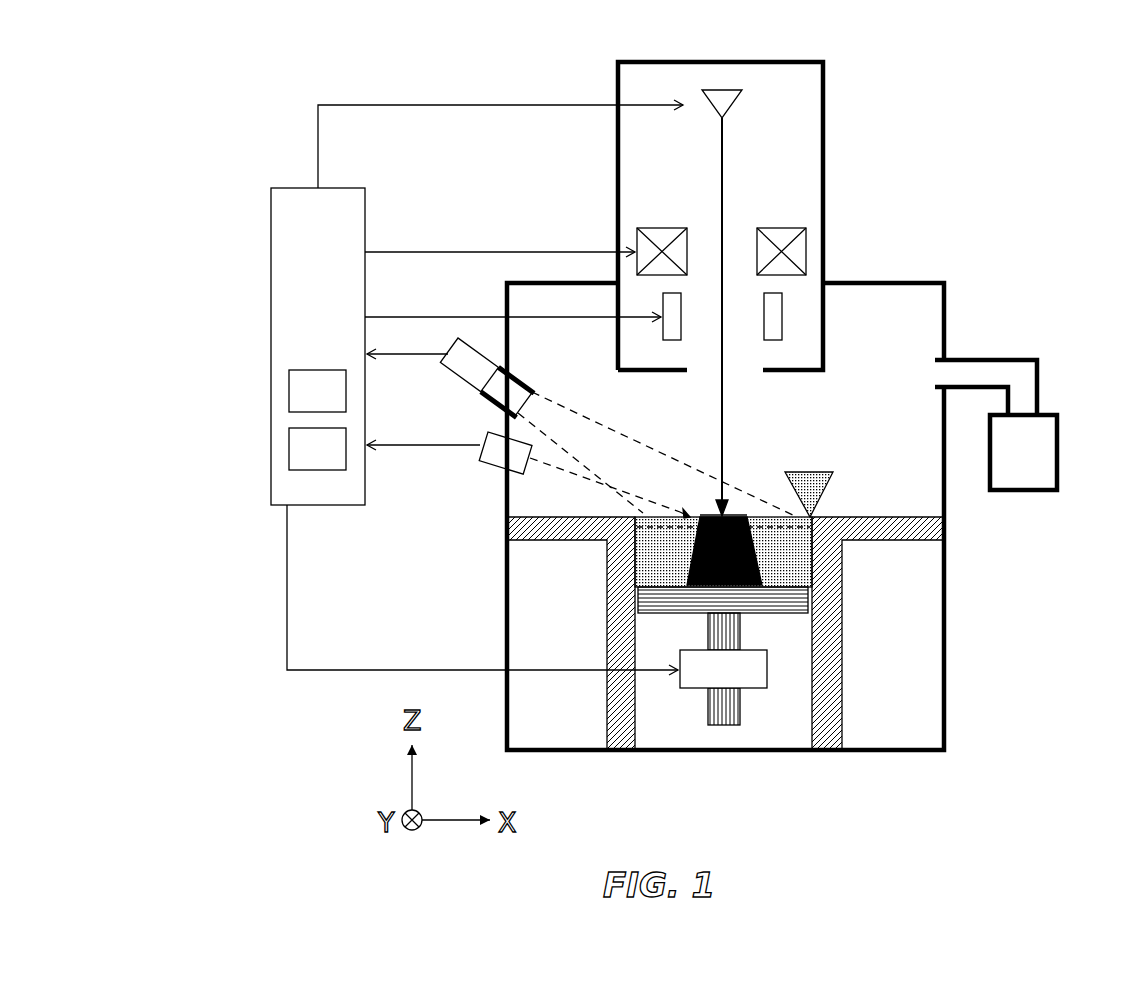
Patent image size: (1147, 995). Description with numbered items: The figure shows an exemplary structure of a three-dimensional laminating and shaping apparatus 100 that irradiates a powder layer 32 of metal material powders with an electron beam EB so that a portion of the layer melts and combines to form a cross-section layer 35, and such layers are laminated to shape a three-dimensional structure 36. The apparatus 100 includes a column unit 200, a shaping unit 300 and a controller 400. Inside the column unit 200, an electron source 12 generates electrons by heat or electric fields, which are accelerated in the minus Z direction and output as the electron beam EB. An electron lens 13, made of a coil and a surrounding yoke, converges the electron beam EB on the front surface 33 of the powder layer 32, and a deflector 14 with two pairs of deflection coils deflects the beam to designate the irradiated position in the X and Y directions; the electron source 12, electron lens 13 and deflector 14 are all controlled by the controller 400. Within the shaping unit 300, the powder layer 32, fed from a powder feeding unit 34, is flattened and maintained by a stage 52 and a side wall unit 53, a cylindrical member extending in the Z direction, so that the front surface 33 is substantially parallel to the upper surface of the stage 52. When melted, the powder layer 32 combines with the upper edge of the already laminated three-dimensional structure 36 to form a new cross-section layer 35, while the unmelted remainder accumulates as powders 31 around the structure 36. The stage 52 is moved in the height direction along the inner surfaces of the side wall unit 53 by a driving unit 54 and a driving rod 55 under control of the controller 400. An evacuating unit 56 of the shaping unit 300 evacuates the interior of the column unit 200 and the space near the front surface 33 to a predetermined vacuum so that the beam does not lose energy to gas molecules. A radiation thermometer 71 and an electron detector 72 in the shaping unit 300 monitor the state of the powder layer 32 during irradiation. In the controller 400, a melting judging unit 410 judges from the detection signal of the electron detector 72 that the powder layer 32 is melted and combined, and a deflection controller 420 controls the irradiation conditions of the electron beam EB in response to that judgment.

The three-dimensional laminating and shaping apparatus 100 is at (642, 839).
The column unit 200 is at (846, 32).
The shaping unit 300 is at (1051, 294).
The controller 400 is at (268, 290).
The melting judging unit 410 is at (289, 392).
The deflection controller 420 is at (289, 446).
The electron source 12 is at (740, 101).
The electron lens 13 is at (799, 228).
The deflector 14 is at (782, 315).
The electron beam EB is at (730, 178).
The powders 31 is at (650, 547).
The powder layer 32 is at (663, 522).
The front surface 33 is at (690, 515).
The powder feeding unit 34 is at (806, 472).
The cross-section layer 35 is at (742, 515).
The three-dimensional structure 36 is at (753, 540).
The stage 52 is at (773, 612).
The side wall unit 53 is at (835, 655).
The driving unit 54 is at (755, 686).
The driving rod 55 is at (730, 725).
The evacuating unit 56 is at (1057, 445).
The radiation thermometer 71 is at (440, 372).
The electron detector 72 is at (488, 443).